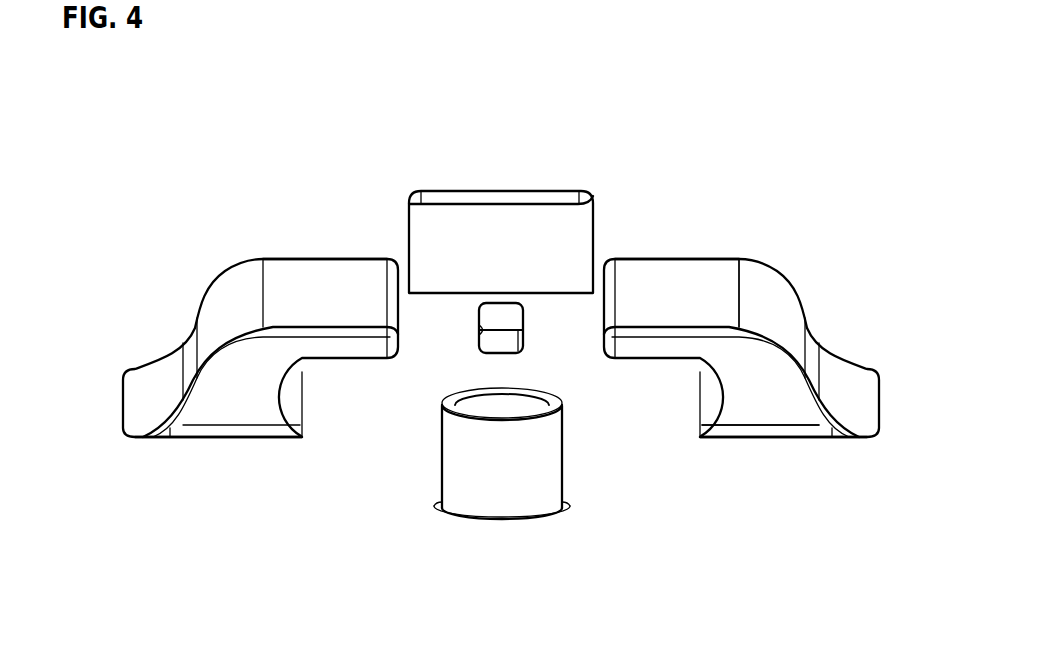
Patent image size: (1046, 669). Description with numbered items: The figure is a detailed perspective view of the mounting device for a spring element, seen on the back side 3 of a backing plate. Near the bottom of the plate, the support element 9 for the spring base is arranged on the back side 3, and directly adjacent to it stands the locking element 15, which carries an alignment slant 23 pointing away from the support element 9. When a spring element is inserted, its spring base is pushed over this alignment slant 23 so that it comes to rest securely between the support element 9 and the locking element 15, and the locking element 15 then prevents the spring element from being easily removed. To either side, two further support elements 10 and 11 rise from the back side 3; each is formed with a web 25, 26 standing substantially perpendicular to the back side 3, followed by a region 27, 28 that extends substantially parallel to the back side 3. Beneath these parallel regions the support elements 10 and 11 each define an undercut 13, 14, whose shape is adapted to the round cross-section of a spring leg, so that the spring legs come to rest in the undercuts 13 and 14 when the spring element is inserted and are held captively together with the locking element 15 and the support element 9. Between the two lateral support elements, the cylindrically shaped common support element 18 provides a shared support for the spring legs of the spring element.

The back side 3 is at (858, 500).
The support element for the spring base 9 is at (568, 285).
The support element 10 is at (225, 295).
The support element 11 is at (778, 297).
The undercut 13 is at (337, 416).
The undercut 14 is at (665, 418).
The locking element 15 is at (502, 317).
The common support element 18 is at (495, 498).
The alignment slant 23 is at (500, 343).
The web 25 is at (235, 393).
The web 26 is at (768, 393).
The region 27 is at (313, 283).
The region 28 is at (689, 285).